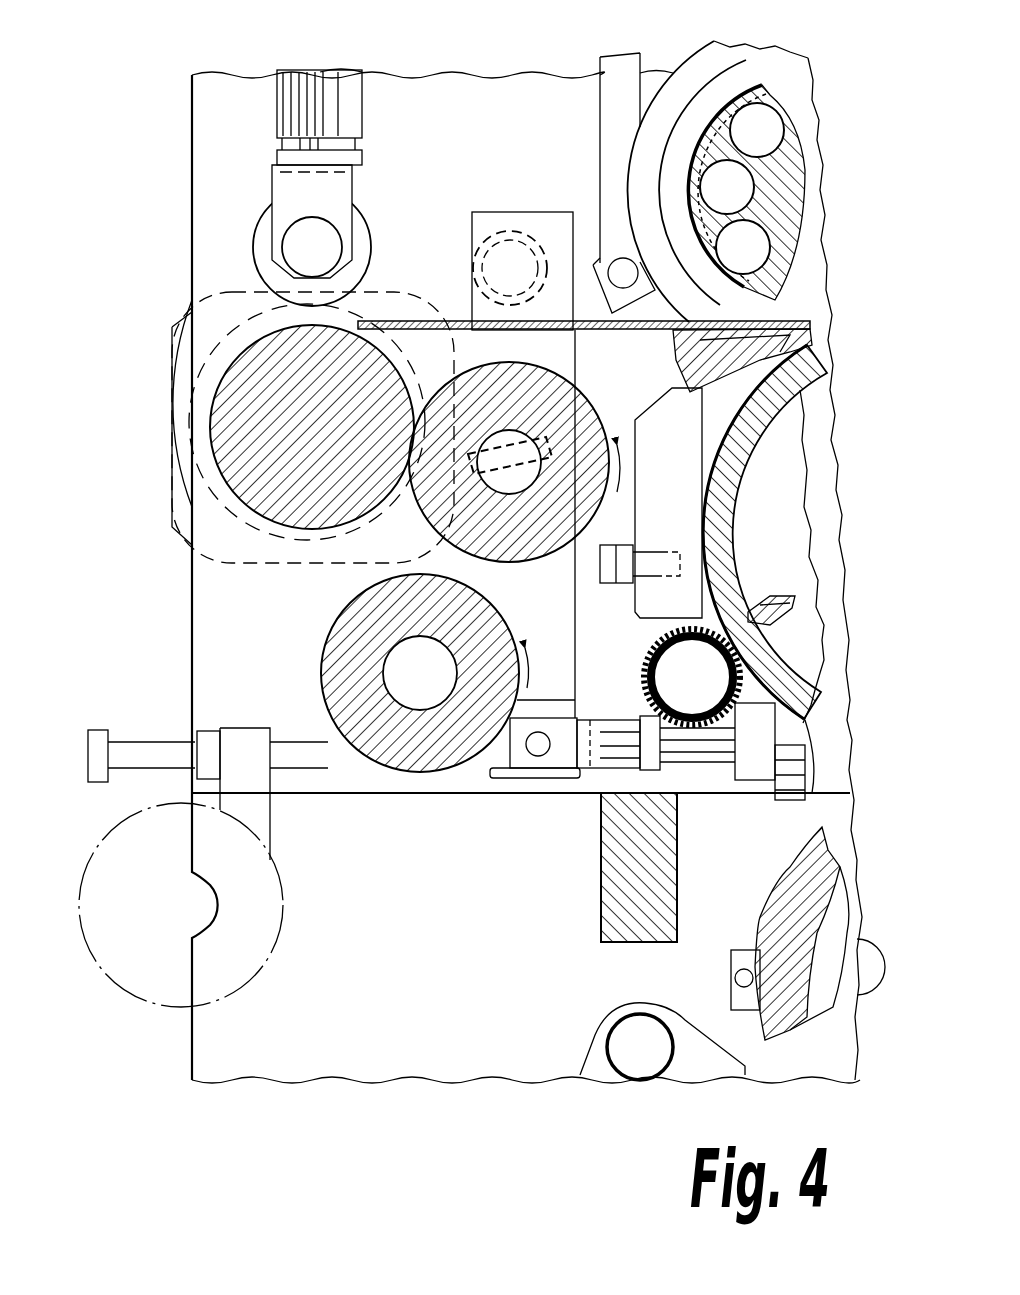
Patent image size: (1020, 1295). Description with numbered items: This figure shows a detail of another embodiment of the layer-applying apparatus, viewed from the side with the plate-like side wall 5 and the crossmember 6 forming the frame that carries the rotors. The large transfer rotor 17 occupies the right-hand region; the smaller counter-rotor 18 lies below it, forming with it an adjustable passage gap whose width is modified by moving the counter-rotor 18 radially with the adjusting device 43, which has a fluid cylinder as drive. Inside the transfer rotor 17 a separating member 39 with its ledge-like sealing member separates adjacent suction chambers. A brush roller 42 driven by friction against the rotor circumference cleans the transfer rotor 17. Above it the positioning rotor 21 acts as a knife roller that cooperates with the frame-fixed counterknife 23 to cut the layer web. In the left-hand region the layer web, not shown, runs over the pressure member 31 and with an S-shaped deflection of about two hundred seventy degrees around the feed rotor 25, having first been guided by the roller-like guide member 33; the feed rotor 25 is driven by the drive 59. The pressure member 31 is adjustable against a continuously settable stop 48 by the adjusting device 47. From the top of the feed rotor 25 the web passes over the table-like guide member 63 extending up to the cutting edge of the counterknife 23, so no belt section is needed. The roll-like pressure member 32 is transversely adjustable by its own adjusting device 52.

The side walls 5 is at (236, 92).
The adjusting device 52 is at (348, 80).
The pressure members 32 is at (375, 238).
The guide member 63 is at (440, 320).
The positioning rotor 21 is at (778, 84).
The counterknife 23 is at (822, 322).
The pressure member 31 is at (588, 395).
The transfer rotor 17 is at (812, 412).
The drive 59 is at (180, 540).
The feed rotor 25 is at (295, 545).
The separating member 39 is at (786, 596).
The guide member 33 is at (322, 670).
The brush roller 42 is at (648, 660).
The stop 48 is at (335, 767).
The adjusting device 47 is at (722, 770).
The crossmembers 6 is at (604, 862).
The counter-rotor 18 is at (842, 864).
The adjusting device 43 is at (702, 998).